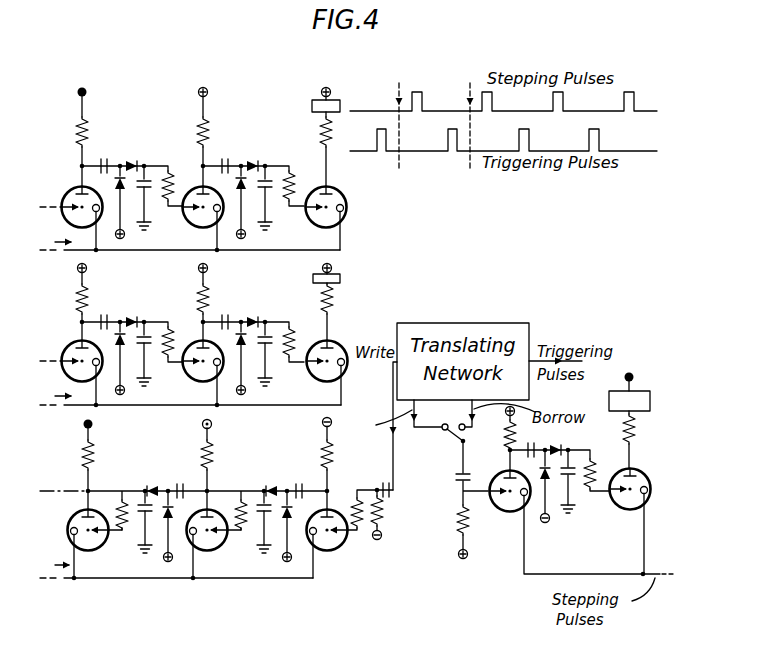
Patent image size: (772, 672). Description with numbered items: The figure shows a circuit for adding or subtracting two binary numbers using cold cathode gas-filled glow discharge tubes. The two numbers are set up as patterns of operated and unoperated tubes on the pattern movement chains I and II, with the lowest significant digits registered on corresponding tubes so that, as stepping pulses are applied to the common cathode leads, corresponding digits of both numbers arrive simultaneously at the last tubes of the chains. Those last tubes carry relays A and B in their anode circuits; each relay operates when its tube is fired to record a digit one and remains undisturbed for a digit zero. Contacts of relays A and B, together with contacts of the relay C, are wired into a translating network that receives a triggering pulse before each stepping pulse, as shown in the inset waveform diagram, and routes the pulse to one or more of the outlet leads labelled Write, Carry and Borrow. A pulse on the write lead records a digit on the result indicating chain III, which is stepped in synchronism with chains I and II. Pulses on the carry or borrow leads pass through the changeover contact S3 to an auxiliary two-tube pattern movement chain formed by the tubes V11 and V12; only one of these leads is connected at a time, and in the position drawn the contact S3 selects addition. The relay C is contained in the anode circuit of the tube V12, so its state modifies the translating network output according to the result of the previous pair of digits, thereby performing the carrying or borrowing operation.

The pattern movement chain I is at (196, 170).
The pattern movement chain II is at (196, 336).
The result indicating chain III is at (226, 495).
The relay A is at (335, 104).
The relay B is at (337, 275).
The relay C is at (629, 419).
The changeover contact S3 is at (460, 491).
The tube V11 is at (580, 492).
The tube V12 is at (627, 472).